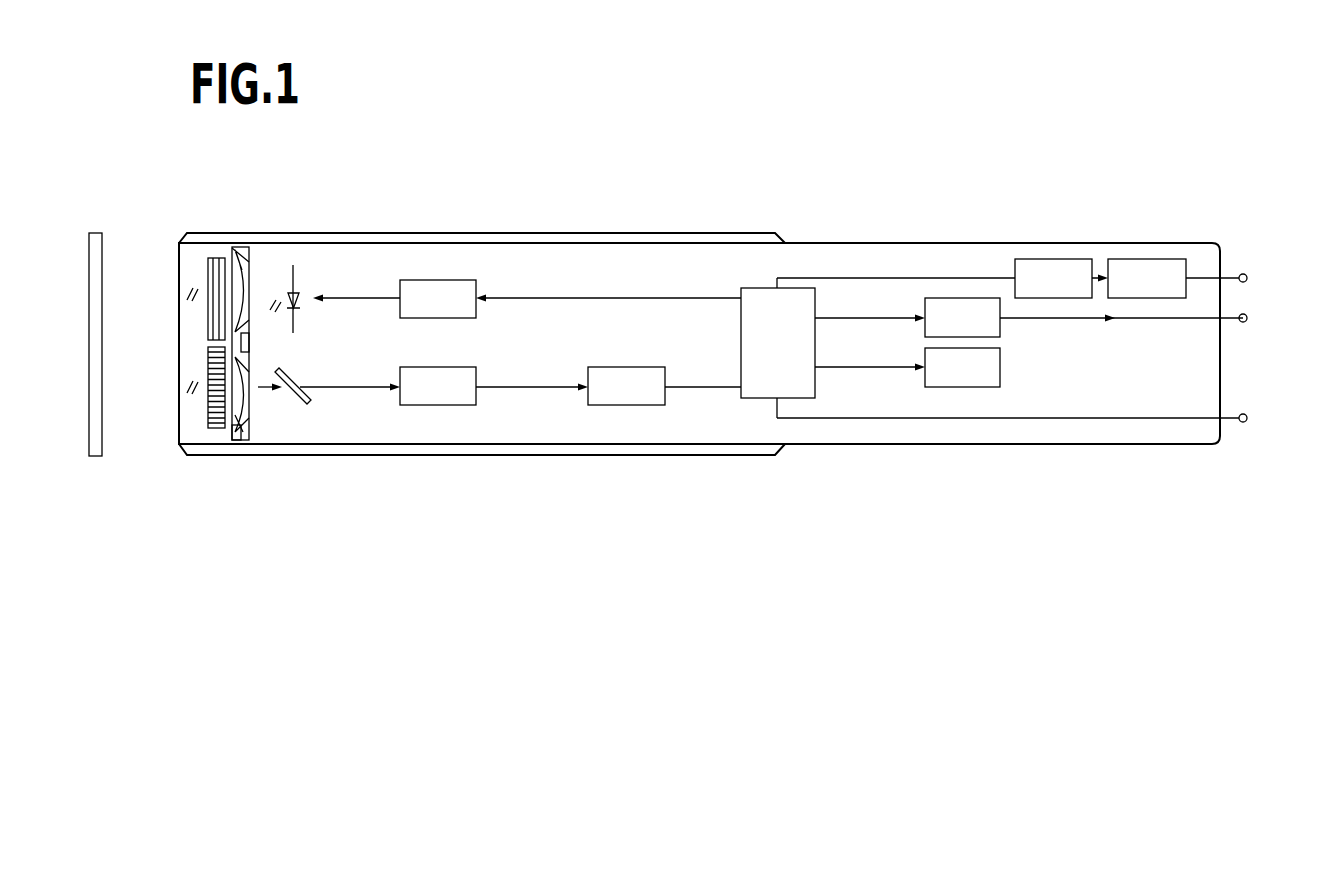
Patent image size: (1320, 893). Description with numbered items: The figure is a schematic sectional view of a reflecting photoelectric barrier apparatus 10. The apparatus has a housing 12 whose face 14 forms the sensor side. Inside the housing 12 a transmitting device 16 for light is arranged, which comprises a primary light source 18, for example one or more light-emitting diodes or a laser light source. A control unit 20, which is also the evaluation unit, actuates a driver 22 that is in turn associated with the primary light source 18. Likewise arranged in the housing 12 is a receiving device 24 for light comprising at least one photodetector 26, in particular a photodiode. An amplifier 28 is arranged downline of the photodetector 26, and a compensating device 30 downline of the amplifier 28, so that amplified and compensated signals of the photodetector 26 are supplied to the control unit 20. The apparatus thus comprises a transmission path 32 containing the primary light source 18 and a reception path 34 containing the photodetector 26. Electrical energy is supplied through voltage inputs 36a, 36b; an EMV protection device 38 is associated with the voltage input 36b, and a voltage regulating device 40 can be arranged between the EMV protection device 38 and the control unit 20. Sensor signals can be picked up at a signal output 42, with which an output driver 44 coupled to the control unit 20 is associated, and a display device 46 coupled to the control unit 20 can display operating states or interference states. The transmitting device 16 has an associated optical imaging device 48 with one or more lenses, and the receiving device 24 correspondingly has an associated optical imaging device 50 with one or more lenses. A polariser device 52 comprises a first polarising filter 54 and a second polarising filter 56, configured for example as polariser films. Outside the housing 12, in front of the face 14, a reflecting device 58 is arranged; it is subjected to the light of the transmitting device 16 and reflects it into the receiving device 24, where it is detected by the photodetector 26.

The photoelectric barrier apparatus 10 is at (700, 157).
The housing 12 is at (580, 451).
The face 14 is at (176, 427).
The transmitting device 16 is at (265, 260).
The primary light source 18 is at (293, 277).
The control unit 20 is at (755, 392).
The driver 22 is at (440, 298).
The receiving device 24 is at (265, 430).
The photodetector 26 is at (310, 403).
The amplifier 28 is at (455, 390).
The compensating device 30 is at (628, 387).
The transmission path 32 is at (373, 260).
The reception path 34 is at (376, 425).
The voltage input 36a is at (1243, 424).
The voltage input 36b is at (1243, 272).
The EMV protection device 38 is at (1138, 278).
The voltage regulating device 40 is at (1045, 278).
The signal output 42 is at (1243, 323).
The output driver 44 is at (1000, 330).
The display device 46 is at (1000, 373).
The optical imaging device 48 is at (235, 272).
The optical imaging device 50 is at (245, 410).
The polariser device 52 is at (197, 242).
The first polarising filter 54 is at (212, 275).
The second polarising filter 56 is at (214, 362).
The reflecting device 58 is at (102, 395).